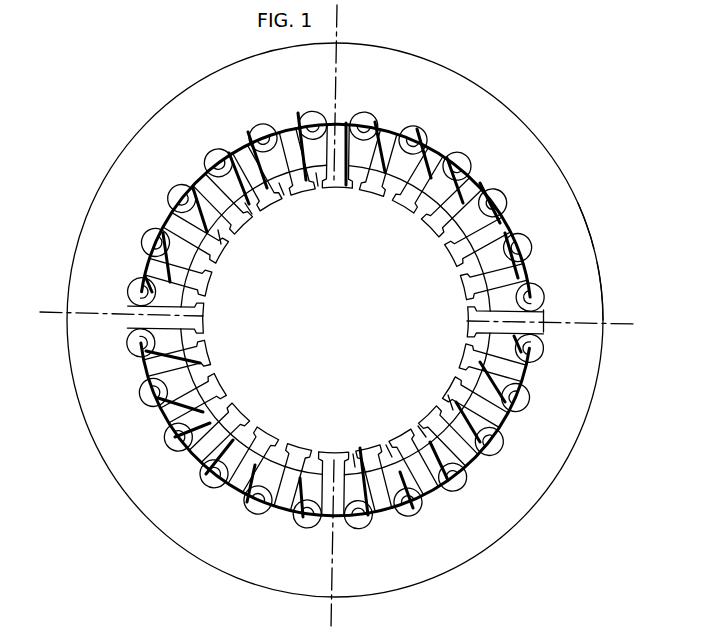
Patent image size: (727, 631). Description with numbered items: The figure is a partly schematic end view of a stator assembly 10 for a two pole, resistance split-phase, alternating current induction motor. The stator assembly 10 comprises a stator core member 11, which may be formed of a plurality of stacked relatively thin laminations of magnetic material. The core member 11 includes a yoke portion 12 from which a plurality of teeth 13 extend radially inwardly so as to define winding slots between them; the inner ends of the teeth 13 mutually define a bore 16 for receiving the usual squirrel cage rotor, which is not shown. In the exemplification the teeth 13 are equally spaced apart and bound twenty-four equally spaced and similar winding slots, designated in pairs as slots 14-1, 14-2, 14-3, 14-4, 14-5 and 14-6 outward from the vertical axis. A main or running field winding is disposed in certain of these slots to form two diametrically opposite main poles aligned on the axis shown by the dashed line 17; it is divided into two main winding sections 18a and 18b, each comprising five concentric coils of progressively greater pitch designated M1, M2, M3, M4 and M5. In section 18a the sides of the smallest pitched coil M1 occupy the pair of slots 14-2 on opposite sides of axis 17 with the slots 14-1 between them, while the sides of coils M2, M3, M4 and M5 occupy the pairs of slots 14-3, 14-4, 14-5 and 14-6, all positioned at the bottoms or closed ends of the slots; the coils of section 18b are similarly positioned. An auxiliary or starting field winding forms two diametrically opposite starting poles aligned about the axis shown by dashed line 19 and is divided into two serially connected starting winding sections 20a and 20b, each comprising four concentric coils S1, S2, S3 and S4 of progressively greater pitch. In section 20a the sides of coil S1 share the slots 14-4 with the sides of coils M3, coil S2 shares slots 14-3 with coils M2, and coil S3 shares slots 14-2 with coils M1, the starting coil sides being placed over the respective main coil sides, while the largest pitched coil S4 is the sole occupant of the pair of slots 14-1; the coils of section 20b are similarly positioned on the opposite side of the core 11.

The stator assembly 10 is at (668, 155).
The stator core member 11 is at (603, 222).
The yoke portion 12 is at (601, 272).
The teeth 13 is at (548, 329).
The winding slots 14-1 is at (311, 110).
The winding slots 14-2 is at (258, 128).
The winding slots 14-3 is at (211, 153).
The winding slots 14-4 is at (174, 193).
The winding slots 14-5 is at (146, 241).
The winding slots 14-6 is at (133, 294).
The bore 16 is at (343, 328).
The main pole axis 17 is at (338, 22).
The main winding section 18a is at (340, 110).
The main winding section 18b is at (331, 537).
The starting pole axis 19 is at (633, 323).
The starting winding section 20a is at (190, 300).
The starting winding section 20b is at (484, 345).
The main winding coil M1 is at (262, 125).
The main winding coil M2 is at (223, 150).
The main winding coil M3 is at (185, 185).
The main winding coil M4 is at (153, 230).
The main winding coil M5 is at (136, 283).
The starting winding coil S1 is at (218, 230).
The starting winding coil S2 is at (245, 203).
The starting winding coil S3 is at (279, 183).
The starting winding coil S4 is at (316, 173).